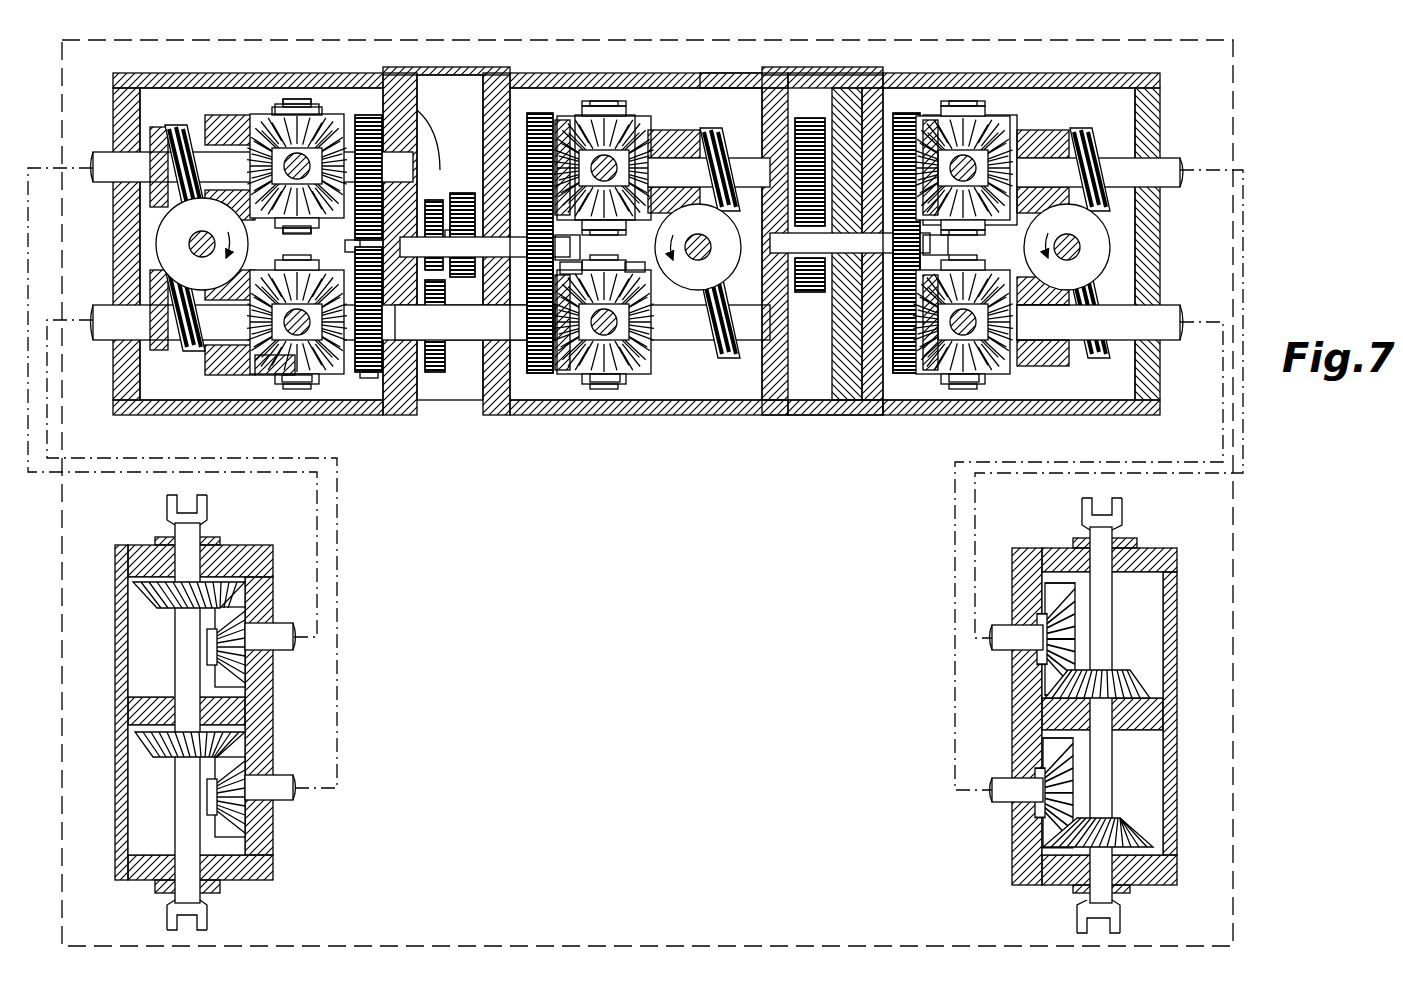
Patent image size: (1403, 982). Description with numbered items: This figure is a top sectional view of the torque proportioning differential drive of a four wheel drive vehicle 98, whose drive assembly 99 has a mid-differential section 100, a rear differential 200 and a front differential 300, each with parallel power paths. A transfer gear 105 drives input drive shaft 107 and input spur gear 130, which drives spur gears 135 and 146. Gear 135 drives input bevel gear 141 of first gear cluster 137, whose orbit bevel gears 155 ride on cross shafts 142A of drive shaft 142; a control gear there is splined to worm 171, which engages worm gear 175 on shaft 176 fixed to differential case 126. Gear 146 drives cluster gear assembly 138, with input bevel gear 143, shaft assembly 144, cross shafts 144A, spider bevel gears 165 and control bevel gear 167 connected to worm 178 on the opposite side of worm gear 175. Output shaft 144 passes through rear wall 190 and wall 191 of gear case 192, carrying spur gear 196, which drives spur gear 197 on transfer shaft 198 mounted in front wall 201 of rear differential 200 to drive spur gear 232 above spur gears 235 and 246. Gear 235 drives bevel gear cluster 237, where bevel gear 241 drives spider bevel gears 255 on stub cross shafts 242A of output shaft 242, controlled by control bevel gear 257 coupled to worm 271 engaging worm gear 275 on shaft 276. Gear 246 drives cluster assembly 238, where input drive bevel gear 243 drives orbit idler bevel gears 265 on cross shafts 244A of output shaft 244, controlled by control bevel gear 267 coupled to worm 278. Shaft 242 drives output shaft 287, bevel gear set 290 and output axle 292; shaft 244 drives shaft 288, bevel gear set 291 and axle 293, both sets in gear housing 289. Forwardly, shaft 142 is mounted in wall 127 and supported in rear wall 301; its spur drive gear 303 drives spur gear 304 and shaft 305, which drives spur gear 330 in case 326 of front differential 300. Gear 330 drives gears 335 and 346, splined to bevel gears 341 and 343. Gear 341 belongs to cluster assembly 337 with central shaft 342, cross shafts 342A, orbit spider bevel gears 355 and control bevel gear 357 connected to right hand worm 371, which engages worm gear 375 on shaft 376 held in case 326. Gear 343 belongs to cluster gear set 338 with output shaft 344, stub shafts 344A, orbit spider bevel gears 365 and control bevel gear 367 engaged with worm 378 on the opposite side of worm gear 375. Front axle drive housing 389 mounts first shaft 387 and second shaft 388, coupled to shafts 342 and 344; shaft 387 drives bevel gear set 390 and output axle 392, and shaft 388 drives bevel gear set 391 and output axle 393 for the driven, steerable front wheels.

The four wheel drive vehicle 98 is at (814, 946).
The four wheel drive assembly 99 is at (690, 60).
The mid-differential section 100 is at (580, 420).
The transfer gear 105 is at (445, 195).
The input drive shaft 107 is at (520, 256).
The differential case 126 is at (708, 74).
The forward wall 127 is at (488, 388).
The input gear 130 is at (558, 236).
The spur gear 135 is at (530, 376).
The first gear cluster 137 is at (622, 380).
The cluster gear assembly 138 is at (645, 108).
The input bevel gear 141 is at (563, 372).
The drive shaft 142 is at (452, 320).
The cross shafts 142A is at (618, 323).
The input bevel gear 143 is at (563, 128).
The shaft assembly 144 is at (705, 155).
The cross shafts 144A is at (605, 104).
The spur gear 146 is at (540, 112).
The orbit bevel gears 155 is at (562, 270).
The spider bevel gears 165 is at (622, 104).
The control bevel gear 167 is at (660, 136).
The worm 171 is at (735, 365).
The worm gear 175 is at (714, 228).
The shaft 176 is at (690, 256).
The worm 178 is at (718, 135).
The rear wall 190 is at (775, 75).
The wall 191 is at (850, 85).
The gear case 192 is at (822, 422).
The spur gear 196 is at (798, 118).
The spur gear 197 is at (800, 293).
The transfer shaft 198 is at (870, 251).
The rear differential 200 is at (1035, 418).
The front wall 201 is at (862, 400).
The spur gear 232 is at (926, 244).
The spur gear 235 is at (905, 378).
The differentiating bevel gear cluster 237 is at (982, 380).
The differentiating bevel cluster gear assembly 238 is at (1027, 115).
The bevel gear 241 is at (925, 375).
The output shaft 242 is at (1165, 338).
The stub cross shafts 242A is at (968, 270).
The input drive bevel gear 243 is at (932, 130).
The output shaft 244 is at (1165, 178).
The stub cross shafts 244A is at (966, 118).
The spur gear 246 is at (898, 118).
The orbiting spider bevel gears 255 is at (1022, 368).
The control bevel gear 257 is at (977, 323).
The orbit idler bevel gears 265 is at (955, 120).
The control bevel gear 267 is at (1022, 140).
The worm 271 is at (1100, 358).
The worm gear 275 is at (1105, 247).
The shaft 276 is at (1062, 256).
The worm 278 is at (1088, 133).
The output shaft 287 is at (1010, 792).
The shaft 288 is at (1015, 640).
The gear housing 289 is at (1062, 560).
The output drive bevel gear set 290 is at (1090, 812).
The bevel gear set 291 is at (1112, 665).
The output axle 292 is at (1110, 900).
The axle 293 is at (1100, 515).
The front differential 300 is at (232, 76).
The rear wall 301 is at (420, 97).
The spur drive gear 303 is at (435, 375).
The spur gear 304 is at (436, 198).
The shaft 305 is at (428, 198).
The case 326 is at (302, 76).
The spur gear 330 is at (422, 140).
The gear 335 is at (396, 70).
The differentiating gear cluster assembly 337 is at (268, 112).
The cluster gear set 338 is at (262, 372).
The bevel gear 341 is at (368, 114).
The central shaft 342 is at (150, 178).
The cross shafts 342A is at (283, 168).
The bevel gear 343 is at (355, 370).
The output shaft 344 is at (150, 332).
The cross stub shafts 344A is at (283, 323).
The gear 346 is at (370, 380).
The orbit spider bevel gears 355 is at (290, 99).
The control bevel gear 357 is at (262, 132).
The orbit spider bevel gear 365 is at (260, 262).
The control bevel gear 367 is at (250, 358).
The right hand worm 371 is at (165, 125).
The worm gear 375 is at (220, 225).
The shaft 376 is at (189, 244).
The worm 378 is at (160, 355).
The first shaft 387 is at (275, 640).
The second shaft 388 is at (280, 783).
The front axle drive housing 389 is at (233, 880).
The bevel gear set 390 is at (210, 630).
The bevel gear set 391 is at (190, 770).
The output axle 392 is at (180, 530).
The output axle 393 is at (182, 893).